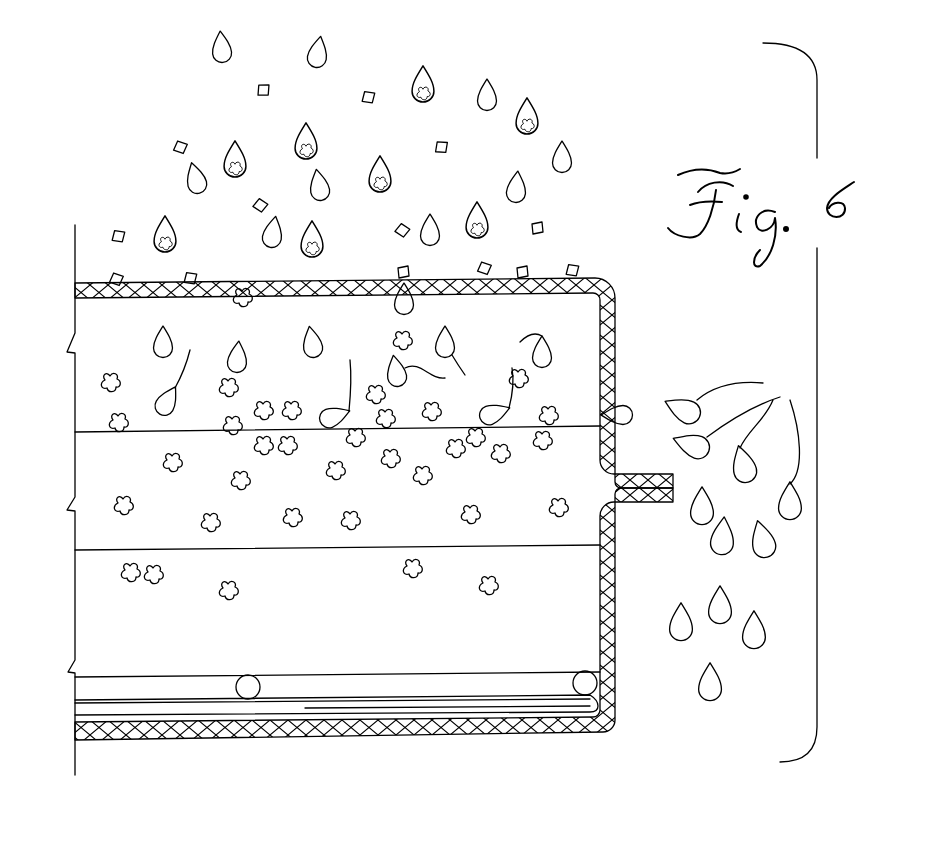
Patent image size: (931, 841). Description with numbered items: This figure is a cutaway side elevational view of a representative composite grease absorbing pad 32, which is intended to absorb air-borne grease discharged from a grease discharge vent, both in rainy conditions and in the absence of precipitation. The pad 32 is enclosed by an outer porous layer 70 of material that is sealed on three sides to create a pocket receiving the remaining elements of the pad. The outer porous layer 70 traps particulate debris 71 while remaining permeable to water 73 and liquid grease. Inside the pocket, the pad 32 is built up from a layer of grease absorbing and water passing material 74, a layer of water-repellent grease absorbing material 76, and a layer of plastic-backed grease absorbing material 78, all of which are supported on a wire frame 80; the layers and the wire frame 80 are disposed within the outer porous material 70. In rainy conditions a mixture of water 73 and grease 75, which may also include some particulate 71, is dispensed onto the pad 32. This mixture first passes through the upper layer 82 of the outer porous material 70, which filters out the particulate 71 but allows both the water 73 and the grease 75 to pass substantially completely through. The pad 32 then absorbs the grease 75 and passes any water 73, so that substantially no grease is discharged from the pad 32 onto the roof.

The grease absorbing pad 32 is at (665, 312).
The outer porous layer 70 is at (162, 283).
The particulate debris 71 is at (370, 90).
The water 73 is at (224, 40).
The grease 75 is at (428, 78).
The layer of grease absorbing and water passing material 74 is at (94, 318).
The layer of water-repellent grease absorbing material 76 is at (113, 472).
The layer of plastic-backed grease absorbing material 78 is at (108, 632).
The wire frame 80 is at (236, 688).
The upper layer 82 is at (76, 292).